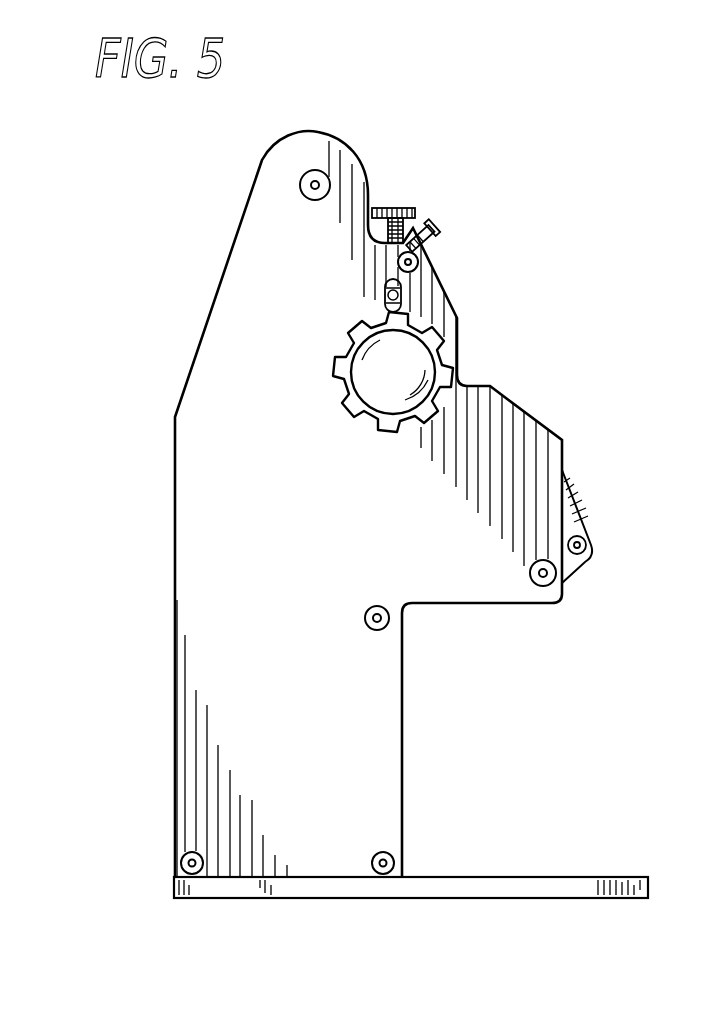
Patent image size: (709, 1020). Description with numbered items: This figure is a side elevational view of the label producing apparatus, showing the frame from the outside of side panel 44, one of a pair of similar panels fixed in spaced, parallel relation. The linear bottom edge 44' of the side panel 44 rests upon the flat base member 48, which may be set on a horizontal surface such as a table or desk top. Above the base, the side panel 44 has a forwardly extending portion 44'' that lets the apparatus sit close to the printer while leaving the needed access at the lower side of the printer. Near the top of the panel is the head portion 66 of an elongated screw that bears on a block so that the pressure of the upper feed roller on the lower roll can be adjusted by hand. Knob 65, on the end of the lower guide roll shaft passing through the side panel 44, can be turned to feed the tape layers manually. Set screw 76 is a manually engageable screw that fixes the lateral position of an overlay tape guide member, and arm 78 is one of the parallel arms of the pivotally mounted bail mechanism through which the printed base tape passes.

The side panel 44 is at (330, 504).
The linear bottom edge 44' is at (323, 738).
The forwardly extending portion 44'' is at (462, 536).
The base member 48 is at (538, 887).
The knob 65 is at (408, 360).
The head portion 66 is at (417, 207).
The set screw 76 is at (428, 228).
The arm 78 is at (578, 520).